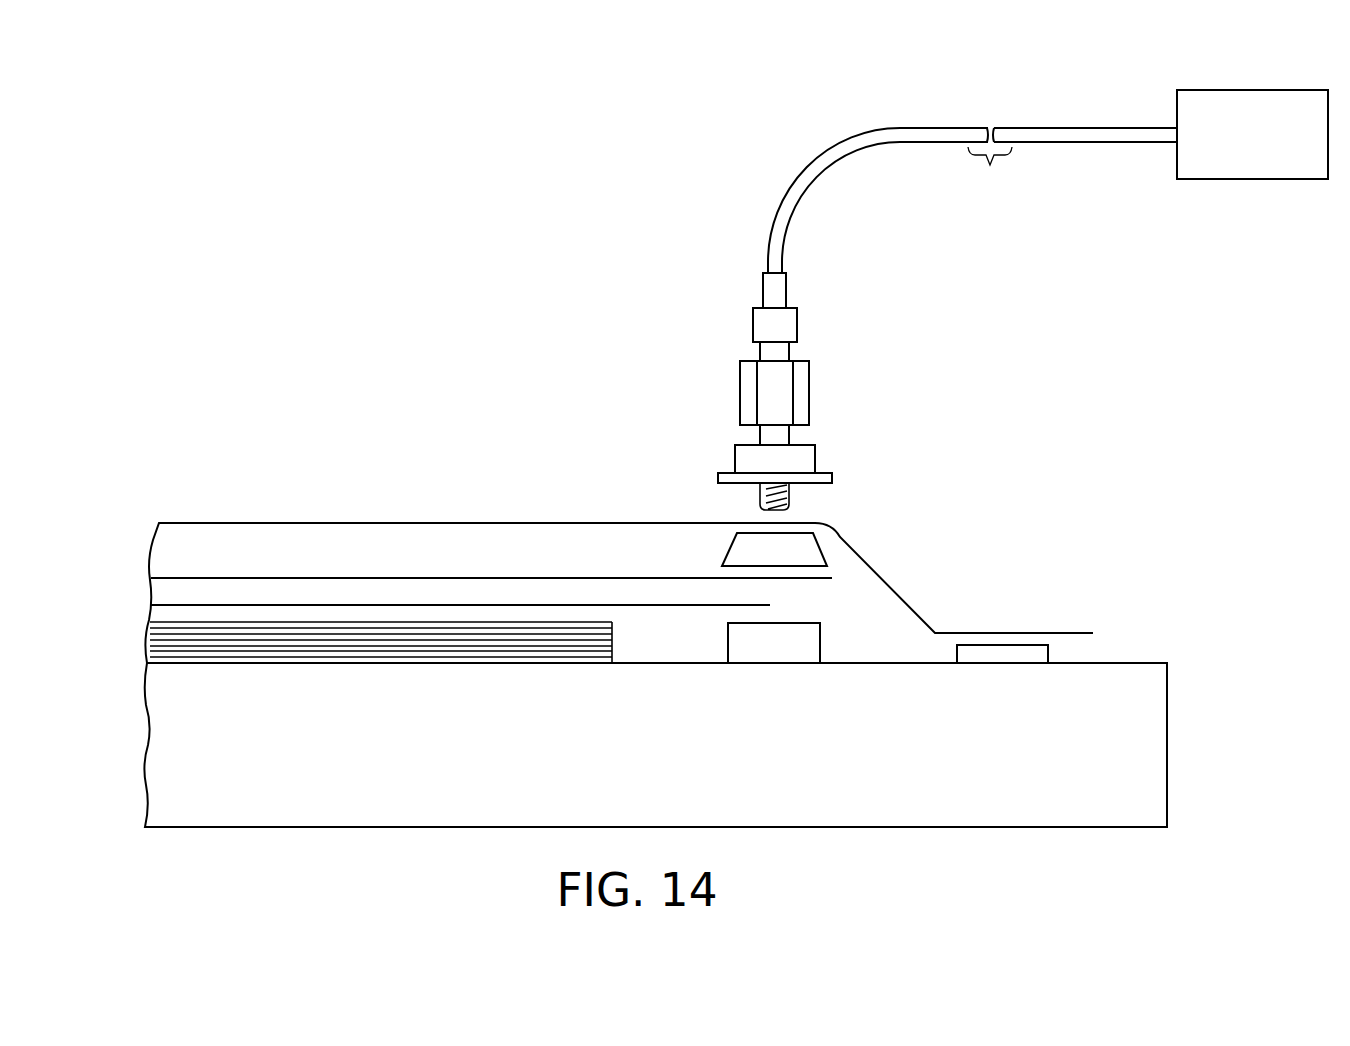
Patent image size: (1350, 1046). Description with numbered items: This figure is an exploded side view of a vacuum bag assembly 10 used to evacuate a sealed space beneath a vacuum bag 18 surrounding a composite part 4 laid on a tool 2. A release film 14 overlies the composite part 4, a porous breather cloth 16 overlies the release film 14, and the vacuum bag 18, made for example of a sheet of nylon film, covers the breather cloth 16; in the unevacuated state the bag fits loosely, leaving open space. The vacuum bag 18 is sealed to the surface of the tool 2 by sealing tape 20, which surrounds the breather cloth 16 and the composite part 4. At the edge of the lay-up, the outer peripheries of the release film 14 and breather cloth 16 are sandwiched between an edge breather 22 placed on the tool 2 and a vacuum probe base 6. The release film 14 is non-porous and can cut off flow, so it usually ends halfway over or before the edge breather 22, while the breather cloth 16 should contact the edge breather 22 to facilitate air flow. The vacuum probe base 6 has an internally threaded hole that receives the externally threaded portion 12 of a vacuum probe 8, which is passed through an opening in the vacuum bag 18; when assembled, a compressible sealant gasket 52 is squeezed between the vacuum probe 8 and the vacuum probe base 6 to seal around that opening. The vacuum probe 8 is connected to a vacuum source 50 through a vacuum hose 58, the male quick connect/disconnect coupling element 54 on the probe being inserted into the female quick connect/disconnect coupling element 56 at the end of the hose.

The tool 2 is at (1170, 690).
The composite part 4 is at (205, 620).
The vacuum probe base 6 is at (827, 556).
The vacuum probe 8 is at (808, 381).
The vacuum bag assembly 10 is at (422, 406).
The externally threaded portion 12 is at (765, 488).
The release film 14 is at (296, 605).
The breather cloth 16 is at (395, 578).
The vacuum bag 18 is at (513, 523).
The sealing tape 20 is at (1030, 645).
The edge breather 22 is at (822, 642).
The vacuum source 50 is at (1224, 179).
The sealant gasket 52 is at (832, 478).
The male quick connect/disconnect coupling element 54 is at (757, 352).
The female quick connect/disconnect coupling element 56 is at (786, 300).
The vacuum hose 58 is at (1063, 128).